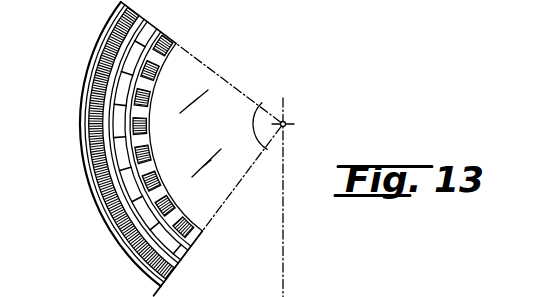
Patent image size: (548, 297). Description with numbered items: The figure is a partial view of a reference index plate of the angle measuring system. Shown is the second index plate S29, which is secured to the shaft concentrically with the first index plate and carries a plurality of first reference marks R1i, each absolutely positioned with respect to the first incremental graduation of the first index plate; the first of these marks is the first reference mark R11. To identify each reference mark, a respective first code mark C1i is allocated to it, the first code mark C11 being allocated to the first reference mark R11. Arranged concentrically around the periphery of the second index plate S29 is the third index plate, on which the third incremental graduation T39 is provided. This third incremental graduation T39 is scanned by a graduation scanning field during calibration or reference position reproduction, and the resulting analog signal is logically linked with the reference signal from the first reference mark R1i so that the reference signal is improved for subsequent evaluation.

The third incremental graduation T39 is at (89, 81).
The first reference marks R1i is at (147, 26).
The first code marks C1i is at (172, 40).
The second index plate S29 is at (247, 103).
The first code mark C11 is at (175, 221).
The first reference mark R11 is at (175, 255).